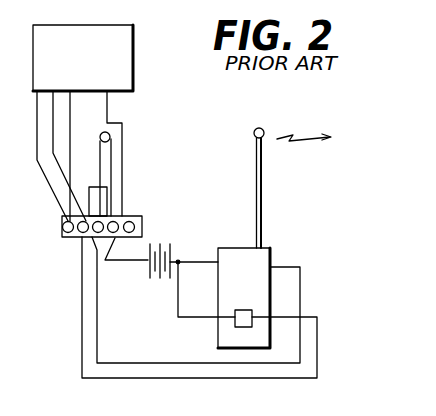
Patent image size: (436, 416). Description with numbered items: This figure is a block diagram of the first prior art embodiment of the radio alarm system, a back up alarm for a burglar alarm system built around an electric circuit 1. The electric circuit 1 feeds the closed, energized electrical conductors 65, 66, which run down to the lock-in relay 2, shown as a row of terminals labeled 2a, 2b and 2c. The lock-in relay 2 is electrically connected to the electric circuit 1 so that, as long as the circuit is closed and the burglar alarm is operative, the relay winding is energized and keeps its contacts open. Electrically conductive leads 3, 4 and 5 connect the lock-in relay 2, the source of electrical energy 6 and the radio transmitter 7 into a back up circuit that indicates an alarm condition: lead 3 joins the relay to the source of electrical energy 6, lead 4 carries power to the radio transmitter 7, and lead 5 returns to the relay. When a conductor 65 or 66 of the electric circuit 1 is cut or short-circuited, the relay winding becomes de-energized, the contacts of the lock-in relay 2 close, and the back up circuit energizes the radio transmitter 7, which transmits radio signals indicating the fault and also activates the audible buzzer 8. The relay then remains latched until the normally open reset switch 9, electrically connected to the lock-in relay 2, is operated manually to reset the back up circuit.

The electric circuit 1 is at (118, 75).
The lock-in relay 2 is at (123, 215).
The relay terminal 2a is at (62, 228).
The relay terminal 2b is at (73, 238).
The relay terminal 2c is at (142, 225).
The electrically conductive lead 3 is at (125, 261).
The electrically conductive lead 4 is at (212, 263).
The electrically conductive lead 5 is at (101, 361).
The source of electrical energy 6 is at (173, 250).
The radio transmitter 7 is at (263, 255).
The buzzer 8 is at (235, 325).
The reset switch 9 is at (110, 136).
The electrical conductor 65 is at (37, 143).
The electrical conductor 66 is at (52, 107).